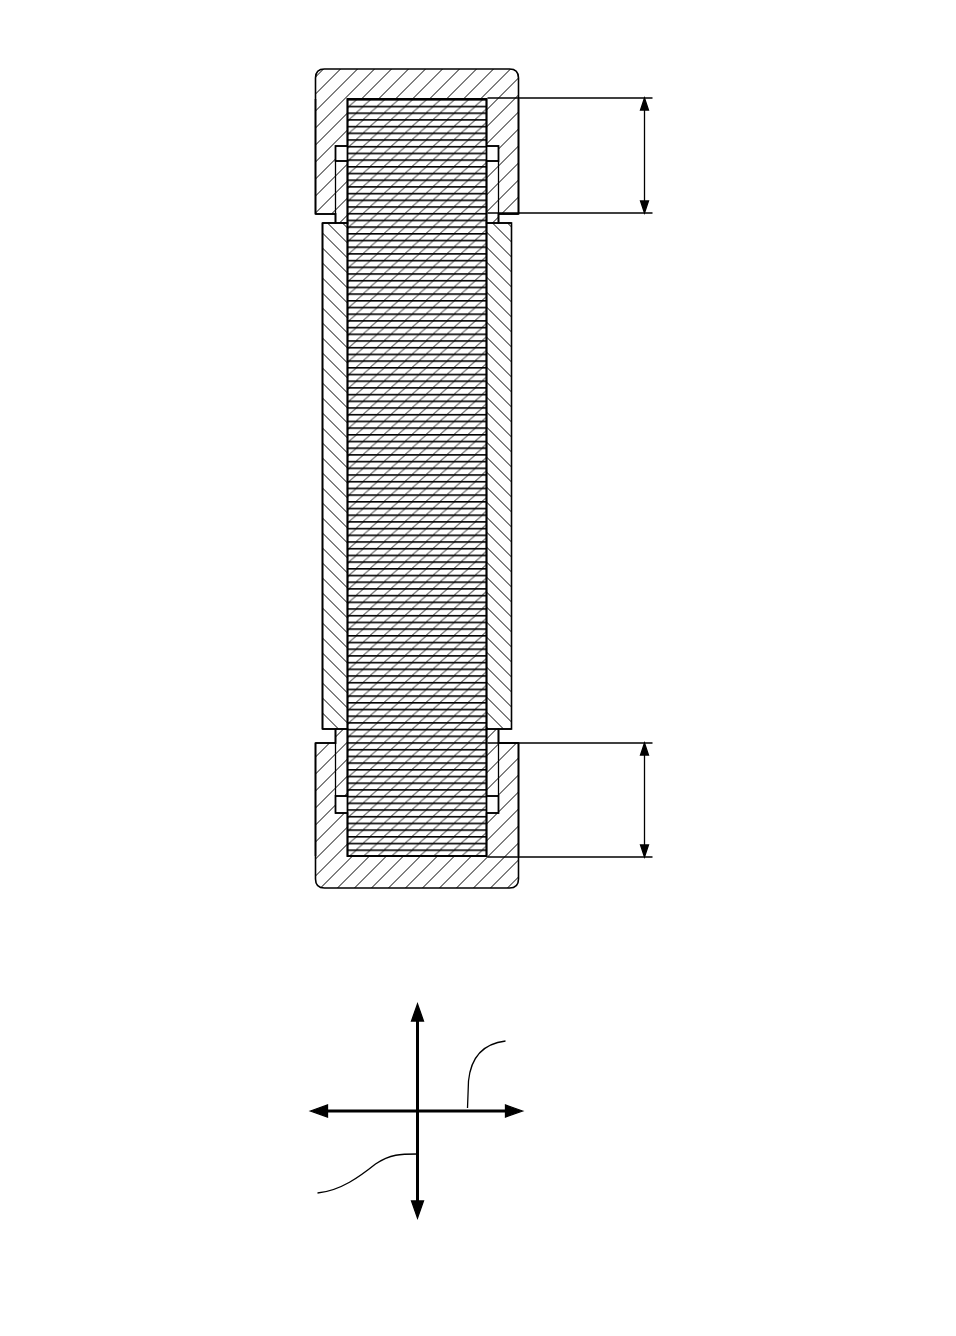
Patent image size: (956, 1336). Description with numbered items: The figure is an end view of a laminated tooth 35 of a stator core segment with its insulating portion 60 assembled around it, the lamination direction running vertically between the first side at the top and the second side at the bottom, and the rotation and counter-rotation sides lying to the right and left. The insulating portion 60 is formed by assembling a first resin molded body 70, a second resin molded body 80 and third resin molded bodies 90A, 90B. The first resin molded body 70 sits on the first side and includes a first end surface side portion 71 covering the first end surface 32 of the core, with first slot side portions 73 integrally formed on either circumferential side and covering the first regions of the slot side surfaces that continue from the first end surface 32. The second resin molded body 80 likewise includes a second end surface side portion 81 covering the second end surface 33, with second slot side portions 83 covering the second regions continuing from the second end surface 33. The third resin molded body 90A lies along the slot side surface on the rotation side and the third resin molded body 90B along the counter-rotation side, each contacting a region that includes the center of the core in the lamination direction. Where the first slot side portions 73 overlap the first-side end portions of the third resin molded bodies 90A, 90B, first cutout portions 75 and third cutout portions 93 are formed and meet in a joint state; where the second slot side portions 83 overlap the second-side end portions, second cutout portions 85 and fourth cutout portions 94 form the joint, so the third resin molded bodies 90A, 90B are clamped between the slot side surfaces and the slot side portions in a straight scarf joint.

The insulating portion 60 is at (140, 410).
The first resin molded body 70 is at (297, 105).
The second resin molded body 80 is at (297, 852).
The first end surface side portion 71 is at (467, 68).
The second end surface side portion 81 is at (467, 887).
The first end surface 32 is at (417, 97).
The second end surface 33 is at (417, 855).
The tooth 35 is at (347, 321).
The first slot side portions 73 is at (315, 169).
The first cutout portions 75 is at (336, 149).
The second slot side portions 83 is at (315, 775).
The second cutout portions 85 is at (336, 805).
The third cutout portions 93 is at (322, 218).
The fourth cutout portions 94 is at (325, 735).
The third resin molded body 90A is at (535, 434).
The third resin molded body 90B is at (288, 497).